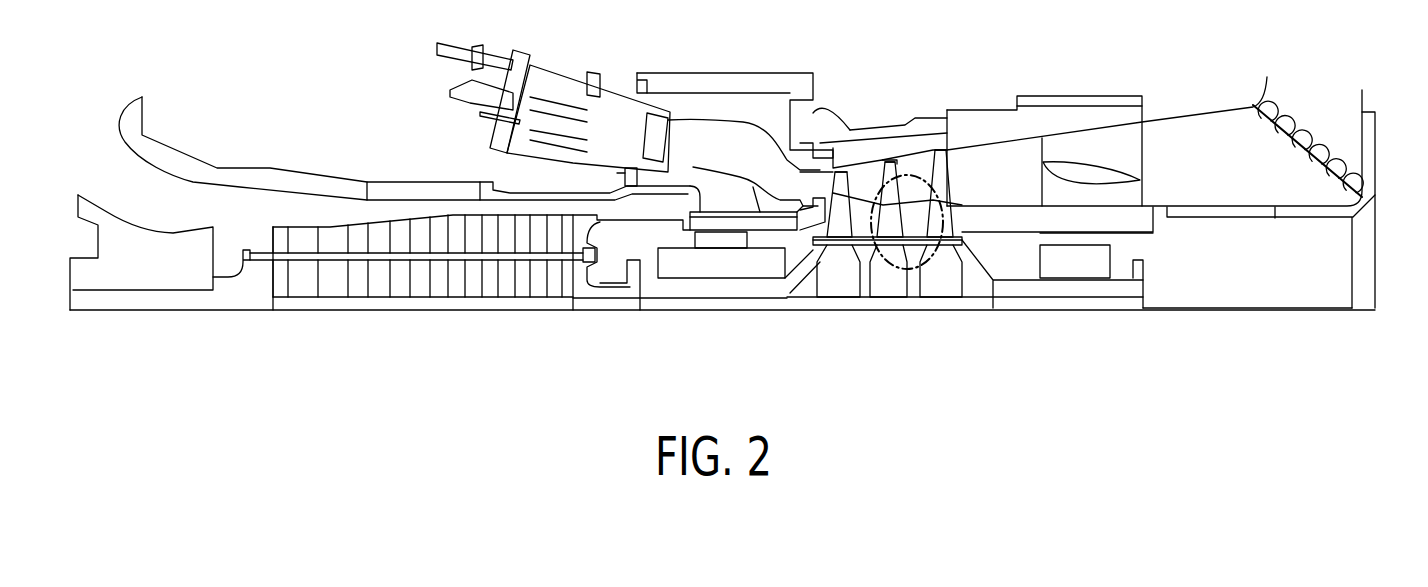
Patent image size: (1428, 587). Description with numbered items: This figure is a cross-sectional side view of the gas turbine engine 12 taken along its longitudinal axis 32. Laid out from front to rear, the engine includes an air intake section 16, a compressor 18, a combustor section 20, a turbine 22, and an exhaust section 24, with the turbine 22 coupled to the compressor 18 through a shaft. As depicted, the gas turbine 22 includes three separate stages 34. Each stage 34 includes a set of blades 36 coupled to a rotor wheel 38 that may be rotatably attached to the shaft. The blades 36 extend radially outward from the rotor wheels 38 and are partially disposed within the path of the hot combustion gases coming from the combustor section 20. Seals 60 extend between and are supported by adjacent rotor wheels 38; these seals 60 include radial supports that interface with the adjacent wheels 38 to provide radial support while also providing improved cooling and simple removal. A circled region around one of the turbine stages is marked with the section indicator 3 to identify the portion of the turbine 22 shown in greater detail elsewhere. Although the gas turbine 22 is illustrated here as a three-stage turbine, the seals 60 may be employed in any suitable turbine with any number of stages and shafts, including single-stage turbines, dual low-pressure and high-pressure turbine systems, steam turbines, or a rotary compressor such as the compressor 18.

The gas turbine engine 12 is at (630, 335).
The air intake section 16 is at (137, 202).
The compressor 18 is at (530, 173).
The combustor section 20 is at (762, 112).
The turbine 22 is at (922, 62).
The exhaust section 24 is at (1365, 62).
The longitudinal axis 32 is at (1232, 308).
The stages 34 is at (862, 357).
The blades 36 is at (888, 160).
The rotor wheels 38 is at (835, 295).
The seals 60 is at (817, 240).
The section line for FIG. 3 is at (943, 163).